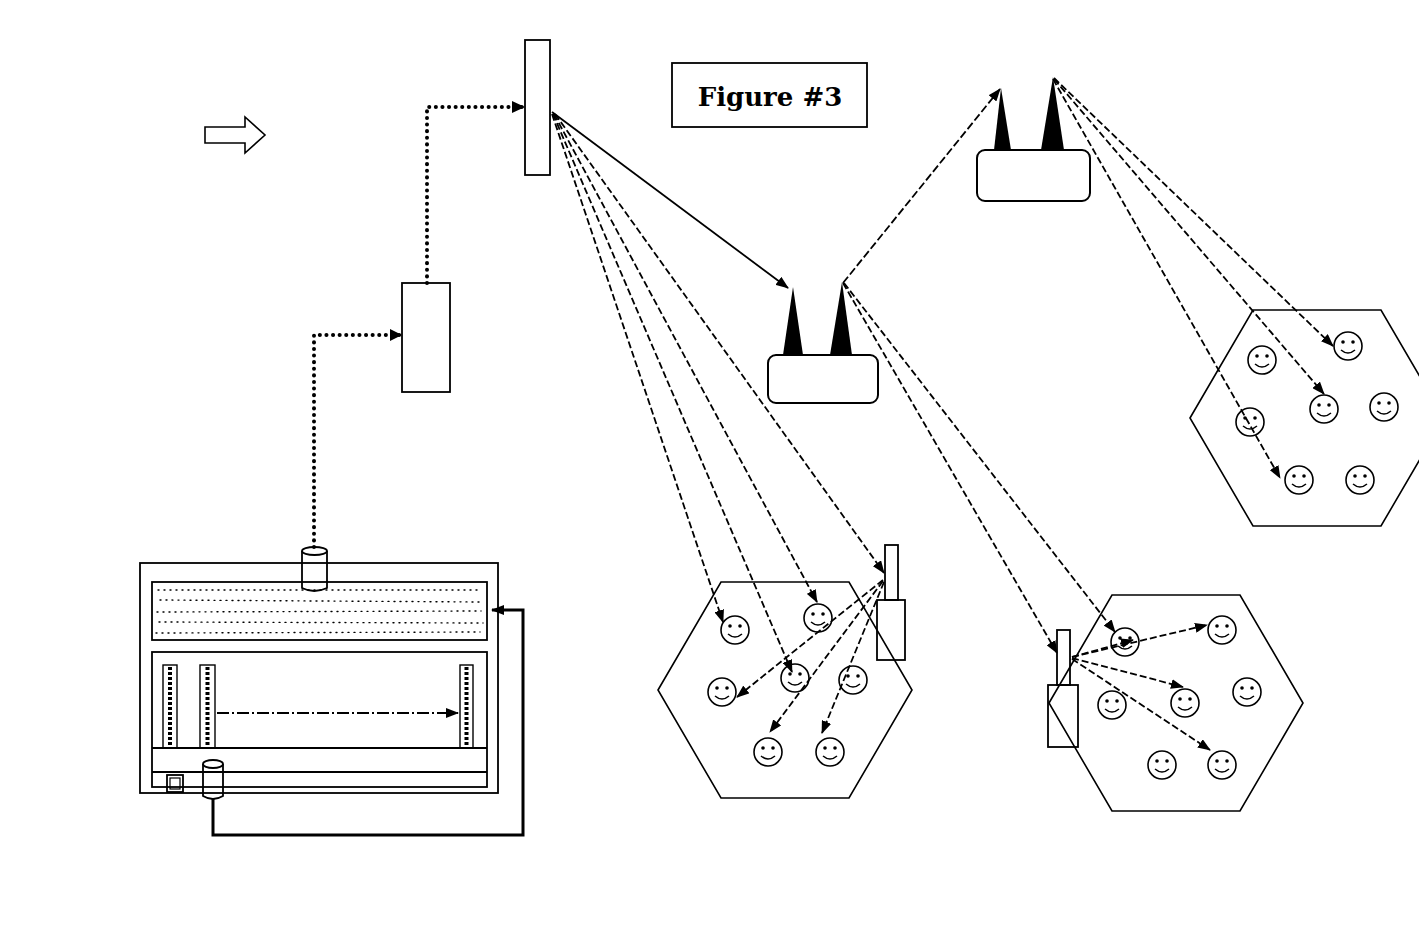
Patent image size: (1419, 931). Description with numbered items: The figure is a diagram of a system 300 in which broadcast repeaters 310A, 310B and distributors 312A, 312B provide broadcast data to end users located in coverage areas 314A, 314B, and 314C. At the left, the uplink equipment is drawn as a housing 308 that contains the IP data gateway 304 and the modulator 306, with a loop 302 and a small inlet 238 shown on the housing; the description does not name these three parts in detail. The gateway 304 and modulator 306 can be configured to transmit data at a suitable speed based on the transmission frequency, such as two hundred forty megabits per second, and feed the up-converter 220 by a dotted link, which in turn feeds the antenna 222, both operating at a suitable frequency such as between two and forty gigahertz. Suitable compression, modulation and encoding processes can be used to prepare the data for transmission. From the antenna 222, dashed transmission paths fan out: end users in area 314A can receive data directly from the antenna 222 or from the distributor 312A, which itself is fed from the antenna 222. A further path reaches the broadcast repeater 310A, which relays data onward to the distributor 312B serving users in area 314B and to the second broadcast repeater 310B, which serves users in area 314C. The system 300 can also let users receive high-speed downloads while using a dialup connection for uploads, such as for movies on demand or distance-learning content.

The system 300 is at (235, 117).
The antenna 222 is at (680, 356).
The up-converter 220 is at (463, 246).
The sensor housing 308 is at (319, 561).
The modulator 306 is at (319, 611).
The IP data gateway 304 is at (318, 706).
The inlet valve 238 is at (163, 802).
The feedback loop conduit 302 is at (363, 739).
The broadcast repeater 310A is at (941, 371).
The broadcast repeater 310B is at (1155, 277).
The distributor 312A is at (853, 639).
The distributor 312B is at (1114, 700).
The coverage area 314A is at (785, 690).
The coverage area 314B is at (1176, 705).
The coverage area 314C is at (1304, 419).